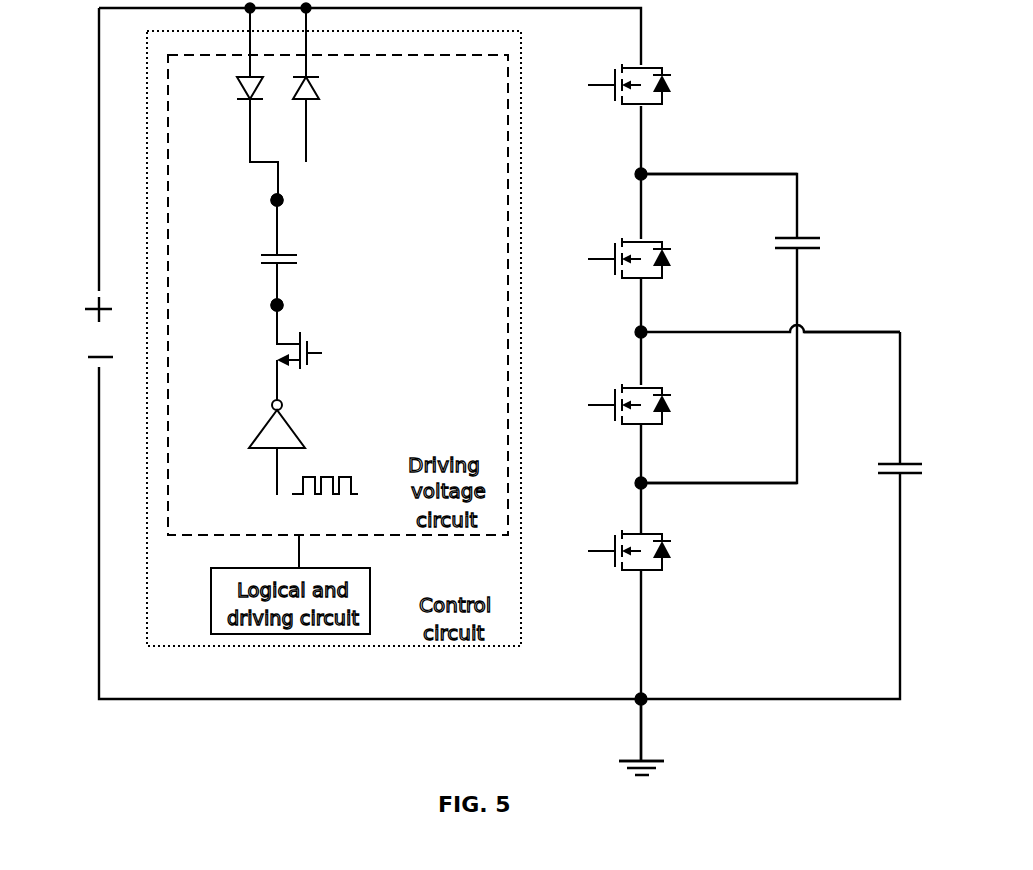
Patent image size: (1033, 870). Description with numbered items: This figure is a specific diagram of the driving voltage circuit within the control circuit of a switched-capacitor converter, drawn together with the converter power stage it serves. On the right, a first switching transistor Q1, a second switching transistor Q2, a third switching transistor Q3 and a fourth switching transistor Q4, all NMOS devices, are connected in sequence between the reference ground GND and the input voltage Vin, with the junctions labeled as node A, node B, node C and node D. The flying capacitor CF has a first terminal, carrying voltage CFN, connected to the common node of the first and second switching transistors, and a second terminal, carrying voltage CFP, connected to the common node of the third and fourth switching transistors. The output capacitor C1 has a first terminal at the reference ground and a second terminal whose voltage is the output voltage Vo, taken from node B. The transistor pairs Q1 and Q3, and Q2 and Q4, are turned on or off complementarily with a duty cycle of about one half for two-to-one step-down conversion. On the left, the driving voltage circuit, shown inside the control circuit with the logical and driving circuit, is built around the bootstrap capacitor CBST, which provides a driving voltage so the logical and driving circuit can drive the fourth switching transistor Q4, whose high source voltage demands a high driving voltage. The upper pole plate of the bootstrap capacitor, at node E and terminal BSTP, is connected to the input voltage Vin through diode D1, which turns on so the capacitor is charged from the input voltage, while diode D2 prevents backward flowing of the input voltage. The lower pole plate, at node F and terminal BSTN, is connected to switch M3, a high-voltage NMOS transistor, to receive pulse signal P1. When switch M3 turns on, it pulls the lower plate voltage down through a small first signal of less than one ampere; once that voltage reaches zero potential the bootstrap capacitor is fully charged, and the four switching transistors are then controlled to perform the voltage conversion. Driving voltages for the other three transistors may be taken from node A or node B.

The input voltage Vin is at (71, 327).
The diode D1 is at (245, 104).
The diode D2 is at (322, 85).
The node E is at (264, 201).
The element BSTP is at (303, 201).
The bootstrap capacitor CBST is at (304, 252).
The node F is at (264, 306).
The element BSTN is at (304, 306).
The switch M3 is at (313, 352).
The pulse signal P1 is at (339, 484).
The fourth switching transistor Q4 is at (612, 84).
The third switching transistor Q3 is at (612, 258).
The second switching transistor Q2 is at (612, 404).
The first switching transistor Q1 is at (611, 550).
The node A is at (632, 163).
The node B is at (630, 321).
The node C is at (632, 472).
The node D is at (630, 688).
The reference ground GND is at (658, 716).
The voltage CFP is at (719, 160).
The voltage CFN is at (719, 497).
The flying capacitor CF is at (822, 233).
The output voltage Vo is at (852, 318).
The output capacitor C1 is at (914, 469).